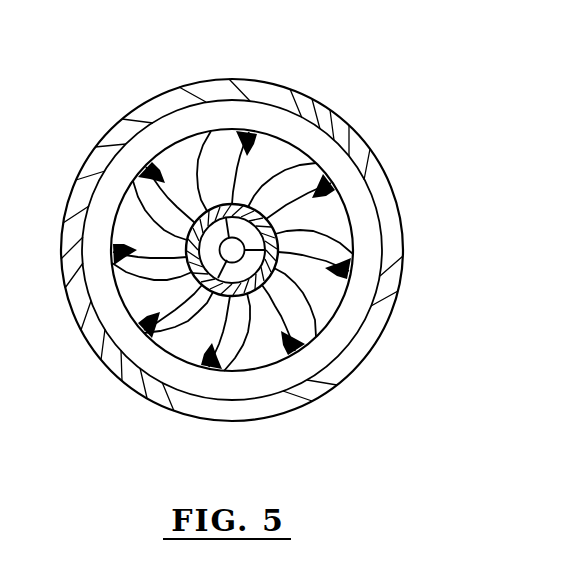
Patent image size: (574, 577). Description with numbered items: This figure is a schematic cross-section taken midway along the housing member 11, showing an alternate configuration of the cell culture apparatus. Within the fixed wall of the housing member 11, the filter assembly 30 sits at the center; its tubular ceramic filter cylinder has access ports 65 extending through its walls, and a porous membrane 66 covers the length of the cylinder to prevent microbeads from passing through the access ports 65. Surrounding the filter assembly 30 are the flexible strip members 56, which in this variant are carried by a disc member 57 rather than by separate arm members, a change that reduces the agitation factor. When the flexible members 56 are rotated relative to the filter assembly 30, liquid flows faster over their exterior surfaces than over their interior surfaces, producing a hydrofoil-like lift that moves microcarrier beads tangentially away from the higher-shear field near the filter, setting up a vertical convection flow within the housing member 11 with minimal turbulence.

The housing member 11 is at (372, 142).
The flexible strip members 56 is at (160, 178).
The disc member 57 is at (193, 153).
The filter assembly 30 is at (220, 276).
The porous membrane 66 is at (212, 264).
The access ports 65 is at (250, 290).